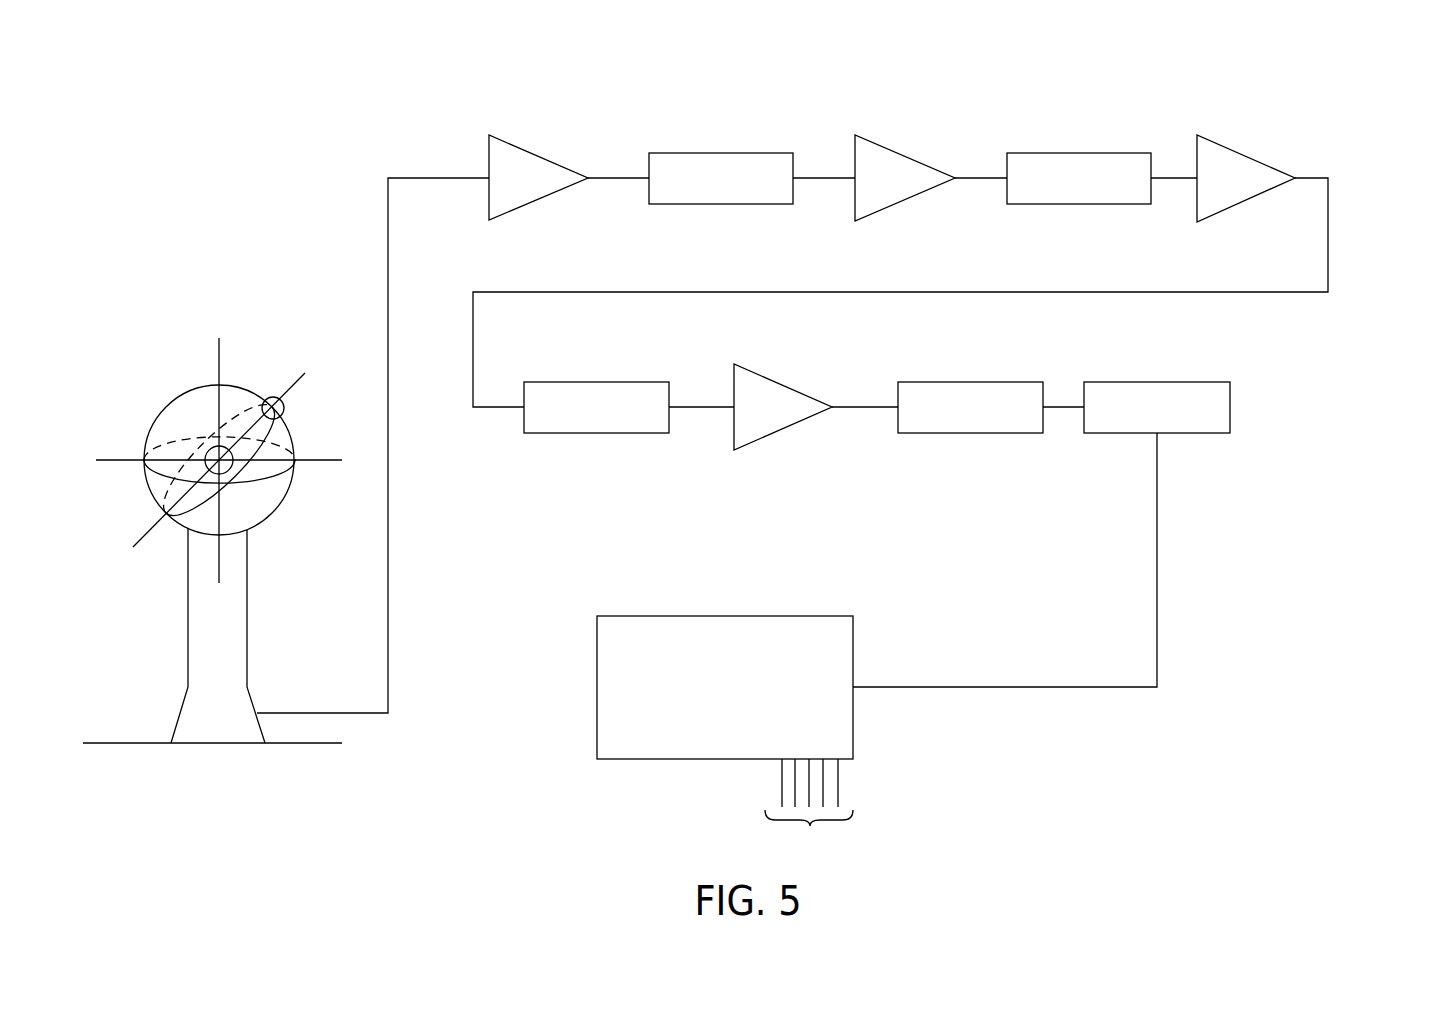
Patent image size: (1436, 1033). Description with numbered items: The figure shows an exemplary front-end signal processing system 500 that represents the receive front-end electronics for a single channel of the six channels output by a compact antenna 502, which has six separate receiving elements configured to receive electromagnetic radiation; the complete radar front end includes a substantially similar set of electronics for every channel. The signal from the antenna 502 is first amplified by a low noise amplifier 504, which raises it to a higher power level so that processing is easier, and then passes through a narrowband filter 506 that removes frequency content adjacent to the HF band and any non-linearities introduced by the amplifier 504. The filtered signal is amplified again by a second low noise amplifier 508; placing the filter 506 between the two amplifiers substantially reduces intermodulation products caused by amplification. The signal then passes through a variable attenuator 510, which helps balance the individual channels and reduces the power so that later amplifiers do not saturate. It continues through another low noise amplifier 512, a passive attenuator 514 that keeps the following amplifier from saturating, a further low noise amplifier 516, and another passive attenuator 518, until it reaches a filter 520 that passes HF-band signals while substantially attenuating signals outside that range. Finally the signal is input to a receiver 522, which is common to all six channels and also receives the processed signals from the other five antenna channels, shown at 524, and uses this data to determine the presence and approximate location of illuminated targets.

The front-end signal processing system 500 is at (1366, 134).
The antenna 502 is at (253, 382).
The low noise amplifier 504 is at (537, 150).
The narrowband filter 506 is at (720, 152).
The low noise amplifier 508 is at (900, 152).
The variable attenuator 510 is at (1078, 152).
The low noise amplifier 512 is at (1242, 152).
The passive attenuator 514 is at (595, 380).
The low noise amplifier 516 is at (772, 377).
The passive attenuator 518 is at (968, 378).
The filter 520 is at (1152, 380).
The receiver 522 is at (723, 615).
The other antenna channel inputs 524 is at (809, 811).